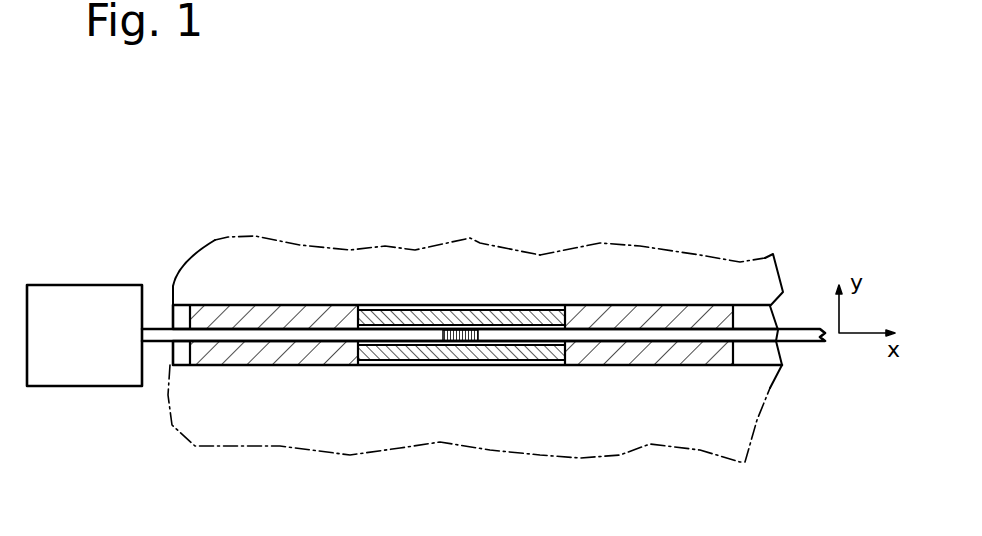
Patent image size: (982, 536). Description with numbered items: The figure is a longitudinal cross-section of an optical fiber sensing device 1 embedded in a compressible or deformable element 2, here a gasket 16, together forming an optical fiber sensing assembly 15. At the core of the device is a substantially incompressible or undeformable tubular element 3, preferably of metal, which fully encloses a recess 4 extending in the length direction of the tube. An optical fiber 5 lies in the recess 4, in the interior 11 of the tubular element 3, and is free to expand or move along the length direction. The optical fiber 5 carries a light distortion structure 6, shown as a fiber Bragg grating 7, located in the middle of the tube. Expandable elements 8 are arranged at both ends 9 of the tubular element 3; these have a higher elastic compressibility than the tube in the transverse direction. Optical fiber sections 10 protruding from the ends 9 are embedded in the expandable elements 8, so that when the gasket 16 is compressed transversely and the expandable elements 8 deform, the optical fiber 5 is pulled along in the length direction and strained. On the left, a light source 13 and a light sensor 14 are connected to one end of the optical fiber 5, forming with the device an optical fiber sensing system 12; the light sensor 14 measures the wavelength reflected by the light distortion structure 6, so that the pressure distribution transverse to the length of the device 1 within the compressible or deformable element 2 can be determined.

The optical fiber sensing device 1 is at (512, 232).
The compressible or deformable element 2 is at (469, 318).
The tubular element 3 is at (537, 352).
The recess 4 is at (461, 270).
The optical fiber 5 is at (164, 332).
The light distortion structure 6 is at (455, 341).
The fiber Bragg grating 7 is at (460, 406).
The expandable element 8 is at (288, 306).
The end of the tubular element 9 is at (362, 366).
The optical fiber section 10 is at (257, 306).
The interior of the tubular element 11 is at (440, 317).
The optical fiber sensing system 12 is at (197, 233).
The light source 13 is at (84, 365).
The light sensor 14 is at (82, 365).
The optical fiber sensing assembly 15 is at (572, 237).
The gasket 16 is at (660, 285).